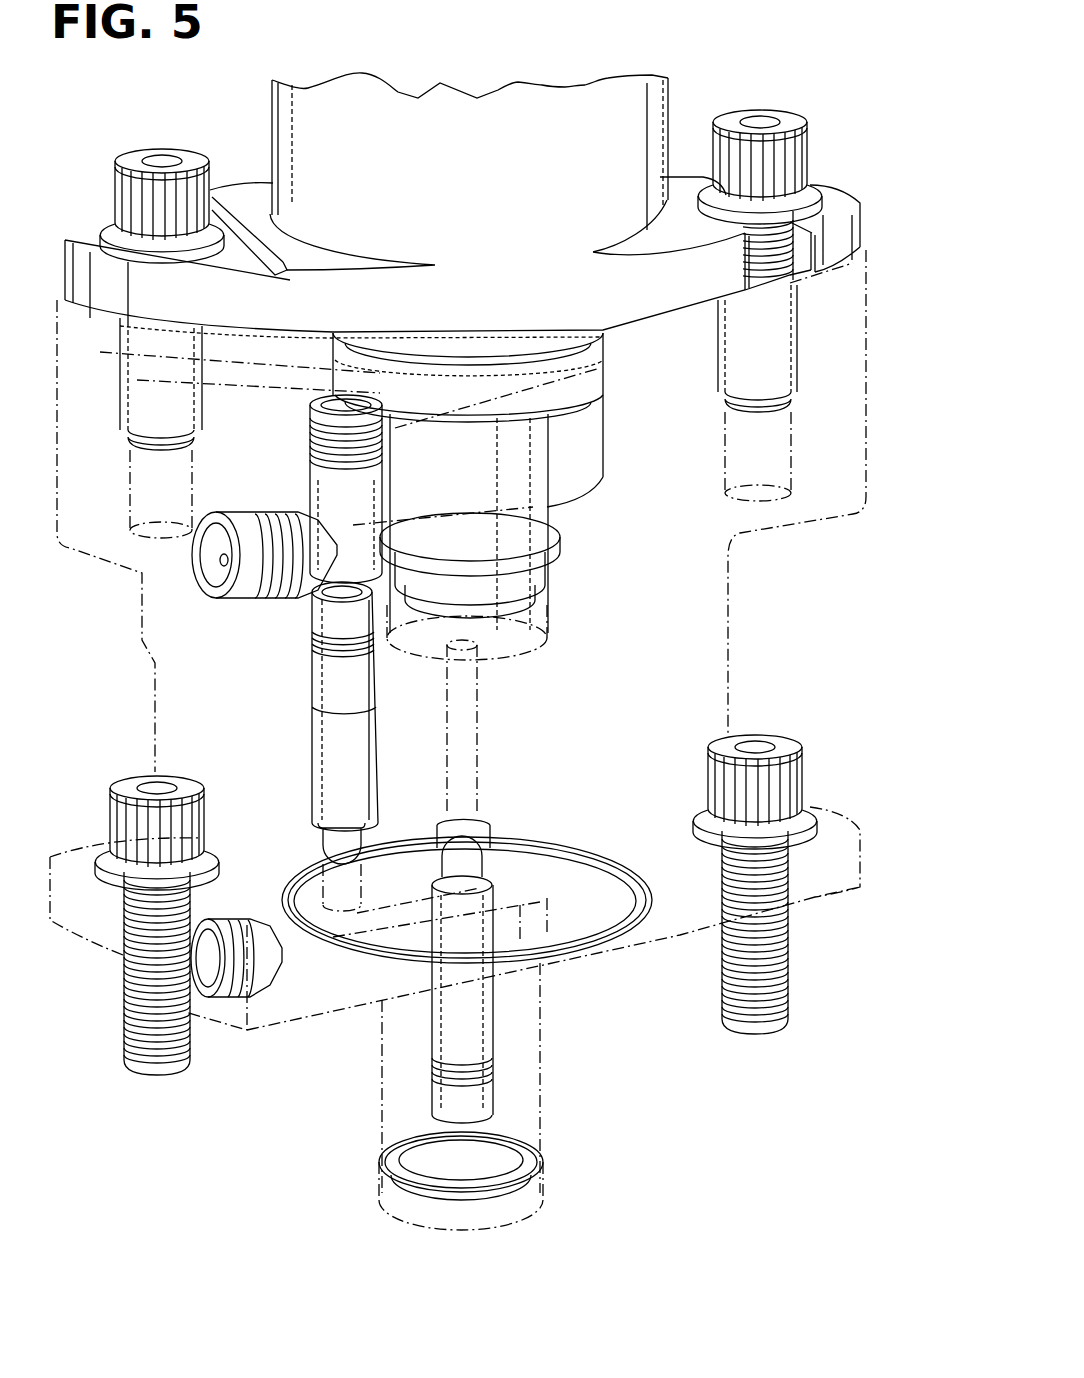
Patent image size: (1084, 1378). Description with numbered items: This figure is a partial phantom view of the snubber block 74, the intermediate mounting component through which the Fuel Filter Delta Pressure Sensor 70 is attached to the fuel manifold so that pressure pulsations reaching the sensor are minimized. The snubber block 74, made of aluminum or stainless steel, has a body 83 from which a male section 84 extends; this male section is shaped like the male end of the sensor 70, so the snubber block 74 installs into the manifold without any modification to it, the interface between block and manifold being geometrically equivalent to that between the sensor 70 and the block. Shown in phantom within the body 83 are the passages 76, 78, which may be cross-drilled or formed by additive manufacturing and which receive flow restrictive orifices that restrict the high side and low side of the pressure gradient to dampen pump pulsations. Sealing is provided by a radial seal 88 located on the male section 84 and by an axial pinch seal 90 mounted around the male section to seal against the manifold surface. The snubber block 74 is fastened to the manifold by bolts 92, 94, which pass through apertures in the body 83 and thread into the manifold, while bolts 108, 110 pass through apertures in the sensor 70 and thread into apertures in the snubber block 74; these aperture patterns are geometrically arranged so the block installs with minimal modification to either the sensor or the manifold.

The Fuel Filter Delta Pressure Sensor 70 is at (540, 115).
The body 83 is at (882, 435).
The snubber block 74 is at (785, 648).
The passage 76 is at (462, 1020).
The passage 78 is at (515, 1078).
The male section 84 is at (513, 1222).
The radial seal 88 is at (545, 1162).
The axial pinch seal 90 is at (583, 935).
The bolt 92 is at (118, 810).
The bolt 94 is at (792, 780).
The bolt 108 is at (125, 196).
The bolt 110 is at (797, 160).